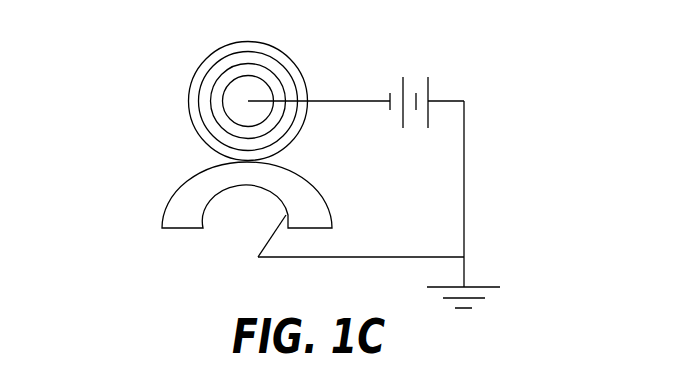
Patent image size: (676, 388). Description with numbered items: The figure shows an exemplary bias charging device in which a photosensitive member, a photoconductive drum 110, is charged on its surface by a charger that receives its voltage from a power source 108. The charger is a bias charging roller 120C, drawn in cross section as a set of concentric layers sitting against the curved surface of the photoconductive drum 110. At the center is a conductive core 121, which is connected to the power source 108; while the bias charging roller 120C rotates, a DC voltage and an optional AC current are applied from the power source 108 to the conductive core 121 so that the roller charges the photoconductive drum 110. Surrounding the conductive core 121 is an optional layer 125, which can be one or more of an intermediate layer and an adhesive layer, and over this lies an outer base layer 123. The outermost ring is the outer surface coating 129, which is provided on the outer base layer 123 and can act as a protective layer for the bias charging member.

The power source 108 is at (464, 210).
The photoconductive drum 110 is at (160, 187).
The bias charging roller 120C is at (263, 88).
The conductive core 121 is at (232, 103).
The outer base layer 123 is at (238, 63).
The optional layer 125 is at (223, 82).
The outer surface coating 129 is at (267, 50).